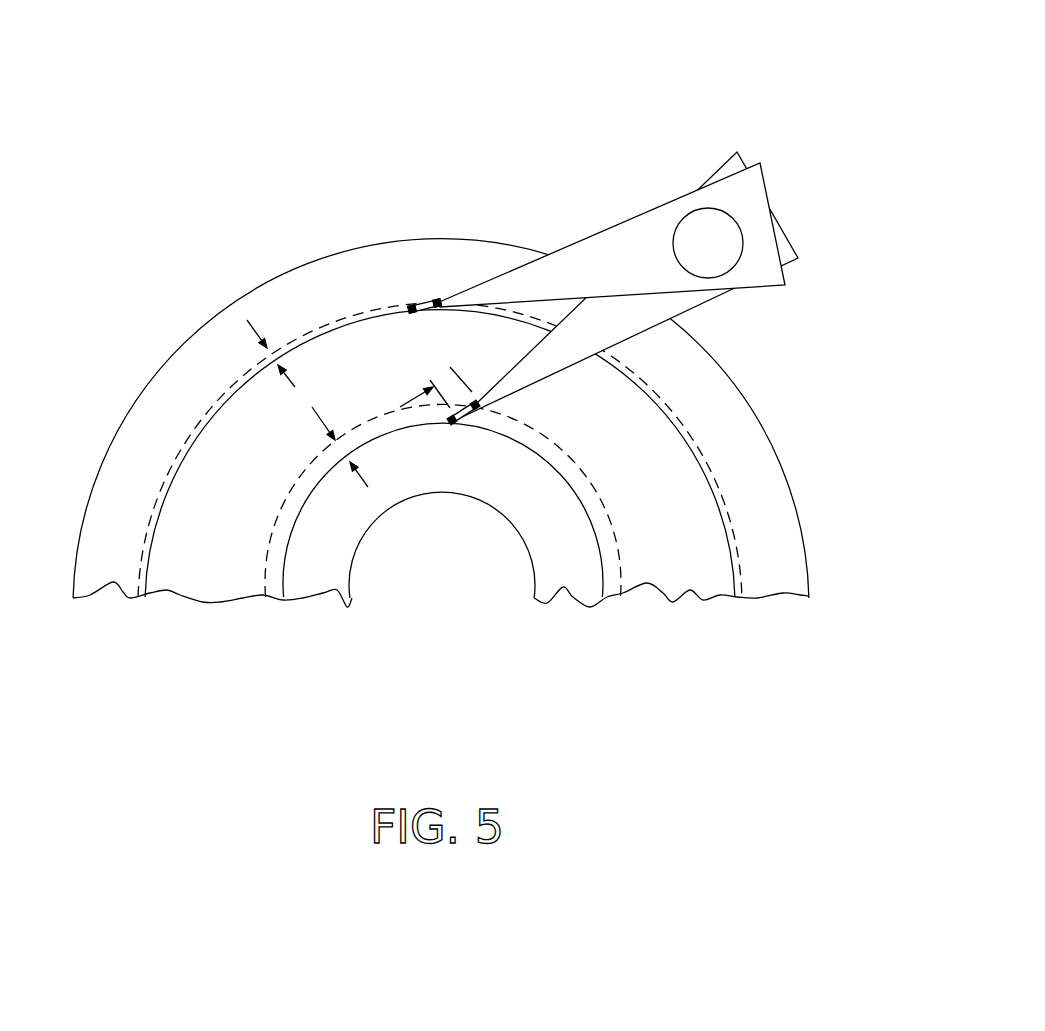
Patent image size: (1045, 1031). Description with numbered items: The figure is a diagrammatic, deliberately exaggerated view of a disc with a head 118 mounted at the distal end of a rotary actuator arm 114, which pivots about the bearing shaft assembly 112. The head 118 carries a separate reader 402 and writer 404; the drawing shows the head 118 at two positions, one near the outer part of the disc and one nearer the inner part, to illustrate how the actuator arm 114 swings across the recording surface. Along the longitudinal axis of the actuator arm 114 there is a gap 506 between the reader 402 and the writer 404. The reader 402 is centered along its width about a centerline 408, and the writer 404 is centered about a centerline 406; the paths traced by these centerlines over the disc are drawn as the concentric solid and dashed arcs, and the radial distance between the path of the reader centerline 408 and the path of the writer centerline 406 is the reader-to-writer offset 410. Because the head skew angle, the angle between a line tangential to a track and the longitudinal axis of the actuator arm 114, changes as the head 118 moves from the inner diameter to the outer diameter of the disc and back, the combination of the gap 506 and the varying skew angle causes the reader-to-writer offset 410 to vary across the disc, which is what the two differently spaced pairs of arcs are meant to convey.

The bearing shaft assembly 112 is at (708, 245).
The actuator arm 114 is at (674, 200).
The head 118 is at (424, 300).
The read element 402 is at (438, 300).
The write element 404 is at (402, 306).
The centerline 406 is at (147, 567).
The centerline 408 is at (137, 583).
The reader-to-writer offset 410 is at (333, 447).
The gap 506 is at (462, 370).